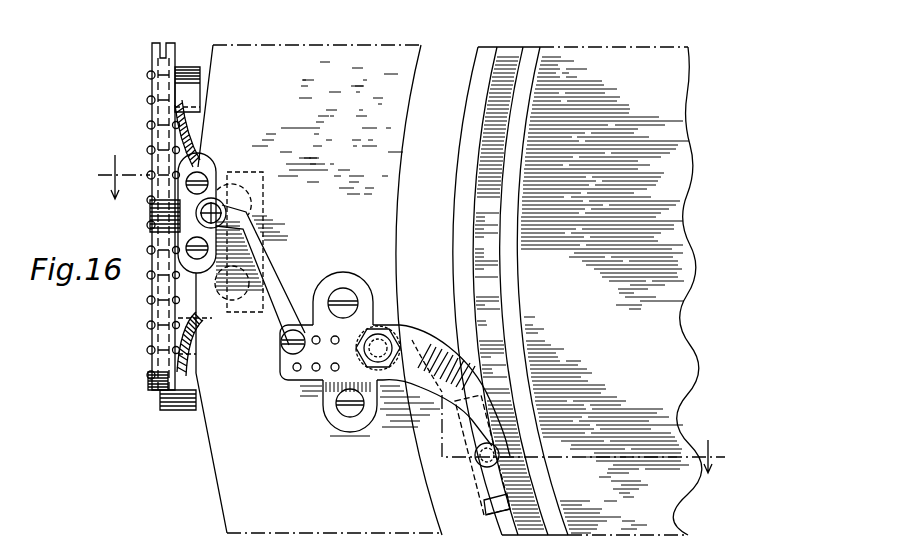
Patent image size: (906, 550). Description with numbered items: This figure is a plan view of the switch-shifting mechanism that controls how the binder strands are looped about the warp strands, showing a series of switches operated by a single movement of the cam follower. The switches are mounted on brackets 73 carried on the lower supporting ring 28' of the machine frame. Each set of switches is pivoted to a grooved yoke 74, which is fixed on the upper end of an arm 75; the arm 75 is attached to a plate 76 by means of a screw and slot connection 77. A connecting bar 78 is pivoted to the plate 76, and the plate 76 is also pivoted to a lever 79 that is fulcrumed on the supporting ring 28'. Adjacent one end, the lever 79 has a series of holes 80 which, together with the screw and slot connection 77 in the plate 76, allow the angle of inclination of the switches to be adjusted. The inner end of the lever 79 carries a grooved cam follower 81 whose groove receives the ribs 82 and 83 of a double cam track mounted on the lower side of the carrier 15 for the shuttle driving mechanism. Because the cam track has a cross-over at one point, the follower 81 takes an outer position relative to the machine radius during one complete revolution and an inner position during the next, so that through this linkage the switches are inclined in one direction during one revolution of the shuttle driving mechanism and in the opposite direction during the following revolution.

The disk carrying the shuttle driving mechanism 15 is at (687, 142).
The lower supporting ring 28' is at (304, 290).
The bracket 73 is at (186, 67).
The grooved yoke 74 is at (152, 50).
The arm 75 is at (150, 215).
The plate 76 is at (199, 160).
The screw and slot connection 77 is at (212, 203).
The connecting bar 78 is at (268, 281).
The lever 79 is at (418, 331).
The series of holes 80 is at (333, 369).
The grooved cam follower 81 is at (494, 494).
The rib of double cam track 82 is at (468, 103).
The rib of double cam track 83 is at (533, 56).